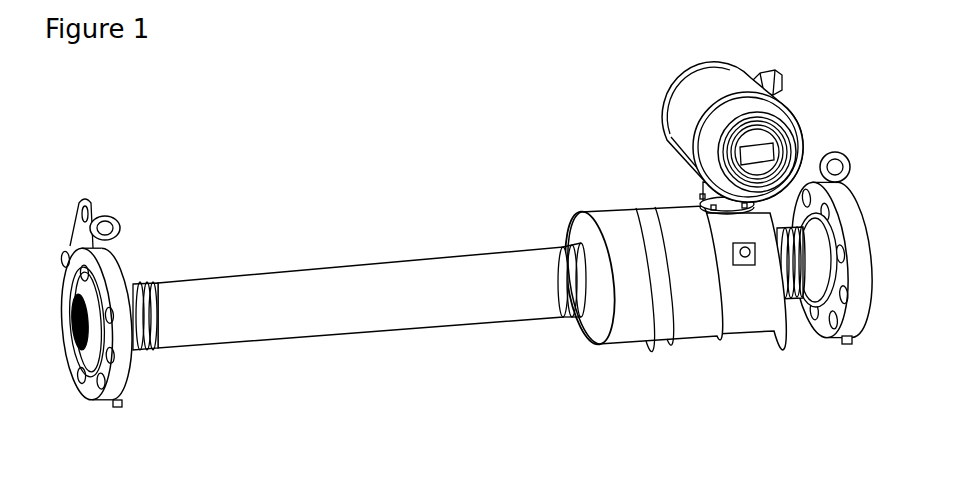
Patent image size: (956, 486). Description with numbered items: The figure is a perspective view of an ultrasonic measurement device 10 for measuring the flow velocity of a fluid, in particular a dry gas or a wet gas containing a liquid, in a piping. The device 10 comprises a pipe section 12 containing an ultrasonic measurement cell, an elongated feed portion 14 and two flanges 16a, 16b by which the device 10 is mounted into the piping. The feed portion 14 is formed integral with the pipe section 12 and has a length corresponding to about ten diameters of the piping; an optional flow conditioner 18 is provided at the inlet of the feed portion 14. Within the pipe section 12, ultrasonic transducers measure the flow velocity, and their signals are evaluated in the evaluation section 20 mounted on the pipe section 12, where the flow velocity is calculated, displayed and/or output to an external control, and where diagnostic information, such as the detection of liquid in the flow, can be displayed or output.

The ultrasonic measurement device 10 is at (446, 249).
The pipe section 12 is at (672, 313).
The elongated feed portion 14 is at (359, 320).
The flange 16a is at (94, 332).
The flange 16b is at (824, 286).
The flow conditioner 18 is at (55, 269).
The evaluation section 20 is at (711, 128).